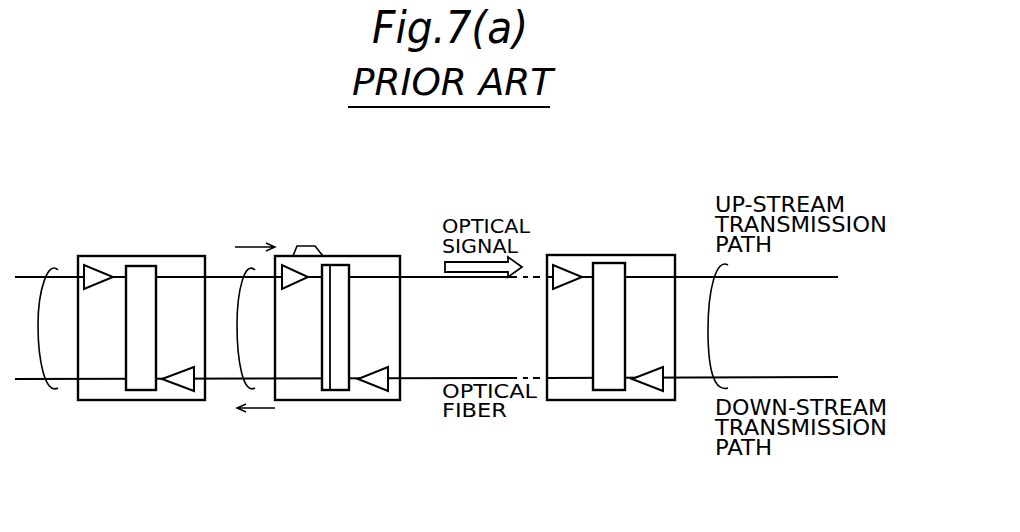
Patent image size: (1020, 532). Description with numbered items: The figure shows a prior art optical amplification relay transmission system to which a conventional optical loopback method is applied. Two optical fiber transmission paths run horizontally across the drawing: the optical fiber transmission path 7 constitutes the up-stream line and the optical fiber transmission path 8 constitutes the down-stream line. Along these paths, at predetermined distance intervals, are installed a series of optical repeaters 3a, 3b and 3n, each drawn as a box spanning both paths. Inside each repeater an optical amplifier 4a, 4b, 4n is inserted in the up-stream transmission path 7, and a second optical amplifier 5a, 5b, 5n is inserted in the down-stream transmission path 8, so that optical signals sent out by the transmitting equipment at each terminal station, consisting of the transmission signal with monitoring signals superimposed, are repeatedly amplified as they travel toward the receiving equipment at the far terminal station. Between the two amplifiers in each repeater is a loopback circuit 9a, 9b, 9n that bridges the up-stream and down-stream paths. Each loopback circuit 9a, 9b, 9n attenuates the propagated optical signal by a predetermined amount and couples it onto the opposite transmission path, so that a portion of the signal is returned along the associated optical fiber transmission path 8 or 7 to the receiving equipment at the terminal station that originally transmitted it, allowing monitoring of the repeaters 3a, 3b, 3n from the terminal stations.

The optical repeater 3a is at (103, 256).
The optical repeater 3b is at (324, 265).
The optical repeater 3n is at (562, 255).
The optical amplifier 4a is at (96, 289).
The optical amplifier 4b is at (290, 289).
The optical amplifier 4n is at (565, 289).
The optical amplifier 5a is at (177, 367).
The optical amplifier 5b is at (375, 367).
The optical amplifier 5n is at (645, 367).
The optical fiber transmission path 7 is at (27, 277).
The optical fiber transmission path 8 is at (27, 379).
The loopback circuit 9a is at (130, 390).
The loopback circuit 9b is at (325, 390).
The loopback circuit 9n is at (597, 390).